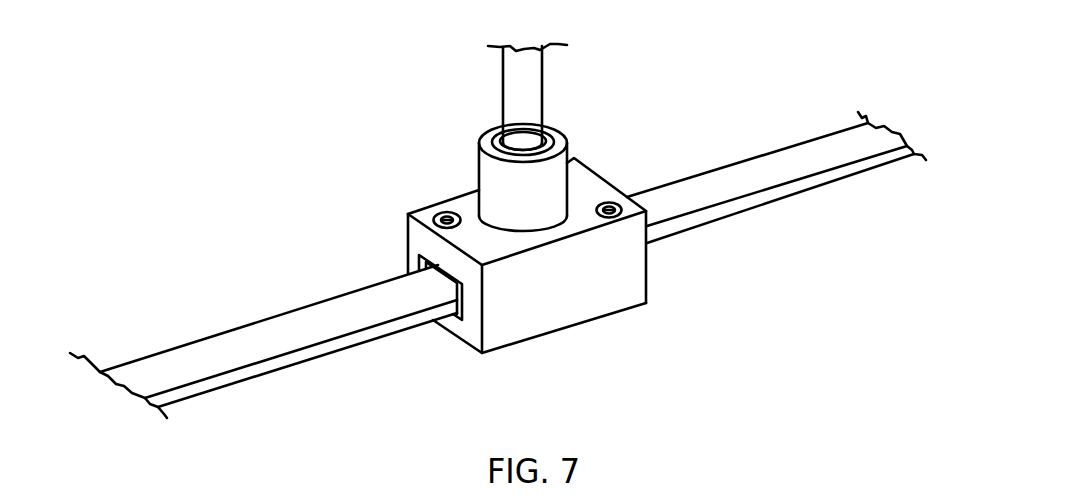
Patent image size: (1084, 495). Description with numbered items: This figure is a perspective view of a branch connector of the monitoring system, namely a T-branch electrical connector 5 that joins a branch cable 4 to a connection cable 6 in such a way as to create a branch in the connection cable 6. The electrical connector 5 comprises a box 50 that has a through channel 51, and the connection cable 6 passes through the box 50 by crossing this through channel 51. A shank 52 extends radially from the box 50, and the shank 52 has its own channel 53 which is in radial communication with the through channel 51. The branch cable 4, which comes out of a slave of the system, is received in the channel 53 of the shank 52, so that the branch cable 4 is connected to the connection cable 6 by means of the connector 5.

The branch cable 4 is at (513, 83).
The T-branch electrical connector 5 is at (569, 232).
The connection cable 6 is at (267, 333).
The box 50 is at (568, 305).
The through channel 51 is at (453, 312).
The shank 52 is at (545, 193).
The channel 53 is at (549, 130).